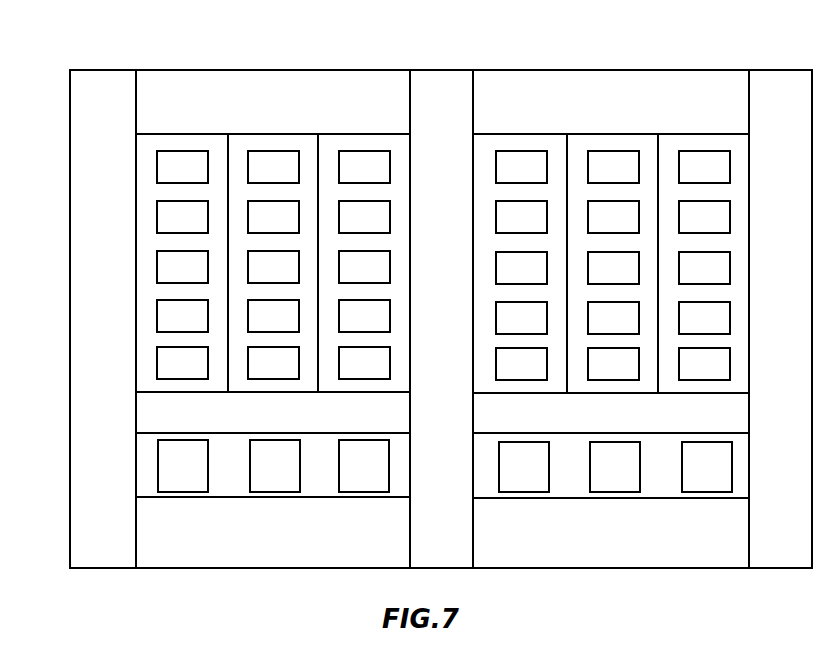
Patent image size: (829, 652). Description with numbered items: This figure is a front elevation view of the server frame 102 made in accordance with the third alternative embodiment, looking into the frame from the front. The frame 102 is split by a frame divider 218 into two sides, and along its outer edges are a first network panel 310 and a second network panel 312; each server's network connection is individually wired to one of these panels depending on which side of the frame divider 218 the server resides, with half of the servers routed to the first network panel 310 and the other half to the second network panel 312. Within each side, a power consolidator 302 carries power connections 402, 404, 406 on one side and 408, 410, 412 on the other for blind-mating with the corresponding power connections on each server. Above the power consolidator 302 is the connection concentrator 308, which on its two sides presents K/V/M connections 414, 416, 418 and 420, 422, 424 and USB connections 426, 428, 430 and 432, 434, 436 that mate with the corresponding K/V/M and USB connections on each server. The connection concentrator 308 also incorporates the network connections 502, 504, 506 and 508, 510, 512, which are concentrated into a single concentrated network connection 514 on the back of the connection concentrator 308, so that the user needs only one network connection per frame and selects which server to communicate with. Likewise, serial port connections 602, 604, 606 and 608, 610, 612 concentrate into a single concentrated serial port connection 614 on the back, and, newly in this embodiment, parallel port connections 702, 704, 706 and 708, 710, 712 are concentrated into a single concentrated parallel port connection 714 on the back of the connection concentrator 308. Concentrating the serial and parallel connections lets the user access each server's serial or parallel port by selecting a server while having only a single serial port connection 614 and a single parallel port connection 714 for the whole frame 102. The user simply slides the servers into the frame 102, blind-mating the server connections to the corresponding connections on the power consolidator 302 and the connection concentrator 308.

The frame 102 is at (250, 568).
The frame divider 218 is at (435, 100).
The power consolidator 302 is at (649, 500).
The connection concentrator 308 is at (632, 135).
The first network panel 310 is at (783, 92).
The second network panel 312 is at (106, 82).
The power connection 402 is at (183, 466).
The power connection 404 is at (275, 466).
The power connection 406 is at (364, 466).
The power connection 408 is at (524, 467).
The power connection 410 is at (615, 467).
The power connection 412 is at (707, 467).
The K/V/M connection 414 is at (182, 167).
The K/V/M connection 416 is at (273, 167).
The K/V/M connection 418 is at (364, 167).
The K/V/M connection 420 is at (521, 167).
The K/V/M connection 422 is at (613, 167).
The K/V/M connection 424 is at (704, 167).
The USB connection 426 is at (182, 217).
The USB connection 428 is at (273, 217).
The USB connection 430 is at (364, 217).
The USB connection 432 is at (521, 217).
The USB connection 434 is at (613, 217).
The USB connection 436 is at (704, 217).
The network connection 502 is at (182, 363).
The network connection 504 is at (273, 363).
The network connection 506 is at (364, 363).
The network connection 508 is at (521, 364).
The network connection 510 is at (613, 364).
The network connection 512 is at (704, 364).
The concentrated network connection 514 is at (487, 401).
The serial port connection 602 is at (182, 267).
The serial port connection 604 is at (273, 267).
The serial port connection 606 is at (364, 267).
The serial port connection 608 is at (521, 268).
The serial port connection 610 is at (613, 268).
The serial port connection 612 is at (704, 268).
The concentrated serial port connection 614 is at (570, 401).
The parallel port connection 702 is at (182, 316).
The parallel port connection 704 is at (273, 316).
The parallel port connection 706 is at (364, 316).
The parallel port connection 708 is at (521, 318).
The parallel port connection 710 is at (613, 318).
The parallel port connection 712 is at (704, 318).
The concentrated parallel port connection 714 is at (659, 401).